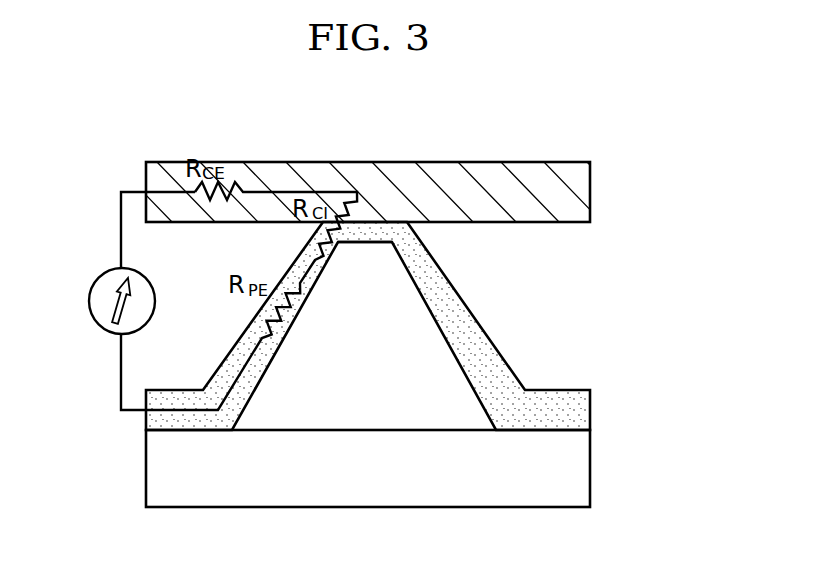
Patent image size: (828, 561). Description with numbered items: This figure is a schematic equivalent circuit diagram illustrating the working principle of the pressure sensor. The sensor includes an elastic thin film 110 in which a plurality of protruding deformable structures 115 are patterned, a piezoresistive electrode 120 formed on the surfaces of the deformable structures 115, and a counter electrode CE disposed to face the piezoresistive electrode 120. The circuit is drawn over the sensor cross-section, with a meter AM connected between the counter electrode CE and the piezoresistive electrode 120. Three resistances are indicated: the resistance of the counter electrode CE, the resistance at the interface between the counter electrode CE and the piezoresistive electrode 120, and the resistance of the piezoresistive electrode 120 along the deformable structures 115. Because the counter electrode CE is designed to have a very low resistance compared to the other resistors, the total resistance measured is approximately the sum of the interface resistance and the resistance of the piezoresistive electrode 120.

The elastic thin film 110 is at (585, 470).
The deformable structures 115 is at (367, 343).
The piezoresistive electrode 120 is at (587, 408).
The counter electrode CE is at (580, 189).
The ammeter AM is at (92, 287).